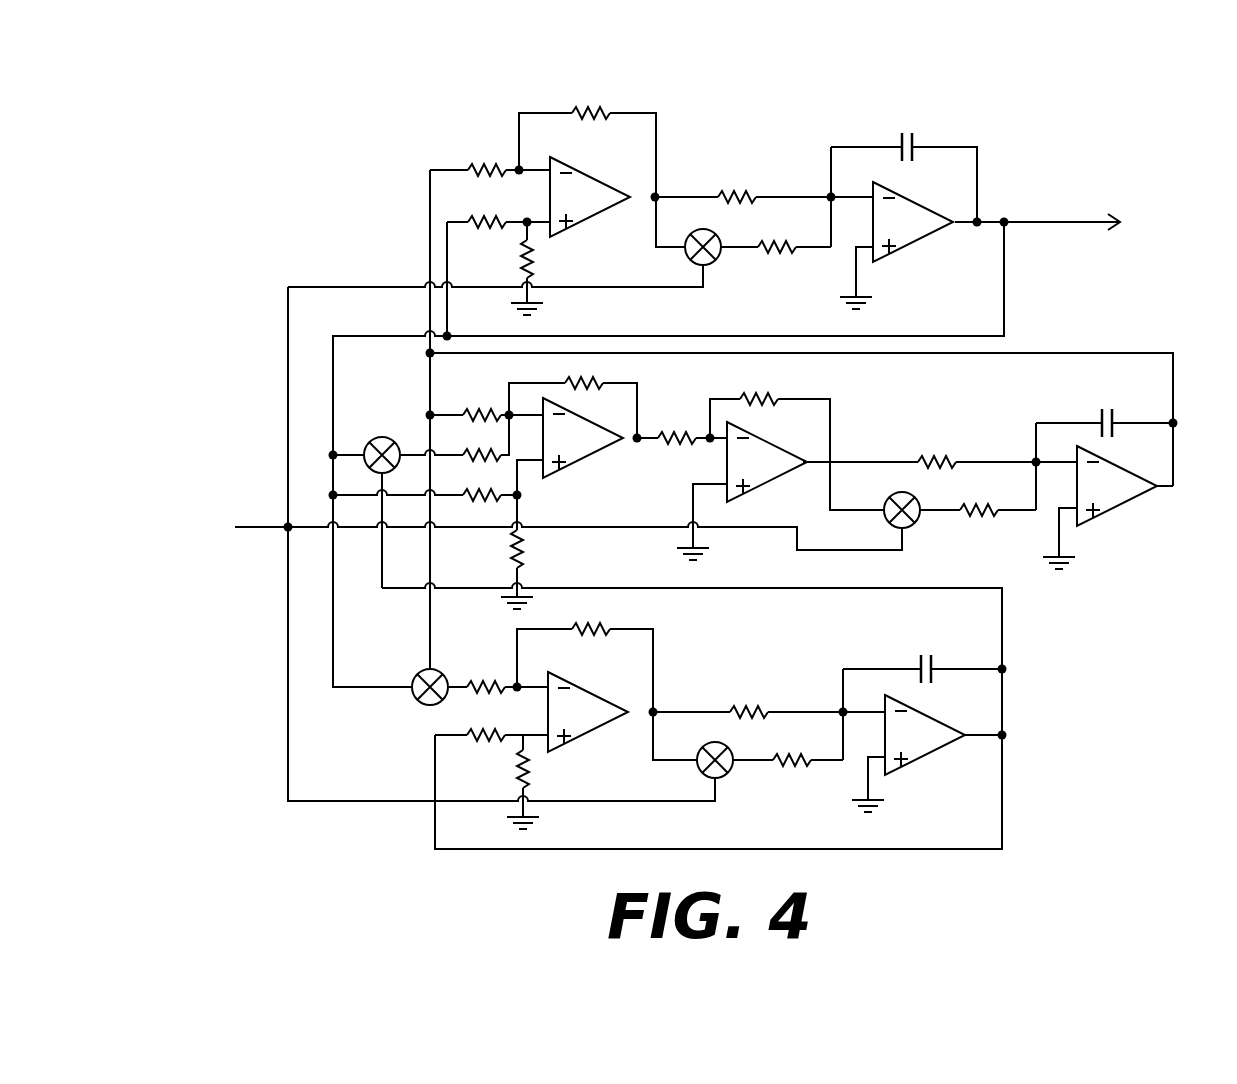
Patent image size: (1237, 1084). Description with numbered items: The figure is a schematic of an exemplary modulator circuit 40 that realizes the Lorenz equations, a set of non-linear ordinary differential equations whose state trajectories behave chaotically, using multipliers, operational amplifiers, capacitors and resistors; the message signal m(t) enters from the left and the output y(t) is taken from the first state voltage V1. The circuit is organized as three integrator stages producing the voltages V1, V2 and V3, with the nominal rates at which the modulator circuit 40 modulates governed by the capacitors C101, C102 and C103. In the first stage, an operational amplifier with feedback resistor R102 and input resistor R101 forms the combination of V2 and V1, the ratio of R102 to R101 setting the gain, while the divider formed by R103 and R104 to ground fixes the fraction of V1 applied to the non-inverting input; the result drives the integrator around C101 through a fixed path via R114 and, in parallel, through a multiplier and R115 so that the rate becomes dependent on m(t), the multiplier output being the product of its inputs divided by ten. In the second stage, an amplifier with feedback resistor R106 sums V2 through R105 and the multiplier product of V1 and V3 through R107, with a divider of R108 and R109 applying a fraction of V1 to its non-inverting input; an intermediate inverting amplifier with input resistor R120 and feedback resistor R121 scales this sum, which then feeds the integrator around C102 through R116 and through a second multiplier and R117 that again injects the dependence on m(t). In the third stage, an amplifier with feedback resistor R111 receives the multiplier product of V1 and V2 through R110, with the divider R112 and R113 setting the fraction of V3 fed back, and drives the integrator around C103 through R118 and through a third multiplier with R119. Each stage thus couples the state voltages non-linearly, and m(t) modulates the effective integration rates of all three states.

The modulator circuit 40 is at (1087, 128).
The resistor R101 is at (482, 160).
The resistor R102 is at (586, 102).
The resistor R103 is at (485, 209).
The resistor R104 is at (552, 259).
The resistor R105 is at (474, 403).
The resistor R106 is at (579, 372).
The resistor R107 is at (474, 443).
The resistor R108 is at (471, 507).
The resistor R109 is at (545, 549).
The resistor R110 is at (480, 674).
The resistor R111 is at (586, 616).
The resistor R112 is at (483, 723).
The resistor R113 is at (551, 769).
The resistor R114 is at (731, 184).
The resistor R115 is at (773, 234).
The resistor R116 is at (931, 450).
The resistor R117 is at (974, 498).
The resistor R118 is at (748, 699).
The resistor R119 is at (787, 746).
The resistor R120 is at (675, 426).
The resistor R121 is at (756, 387).
The capacitor C101 is at (911, 135).
The capacitor C102 is at (1105, 411).
The capacitor C103 is at (928, 659).